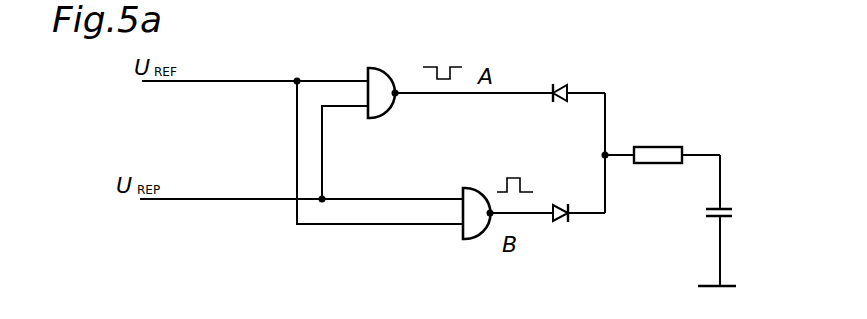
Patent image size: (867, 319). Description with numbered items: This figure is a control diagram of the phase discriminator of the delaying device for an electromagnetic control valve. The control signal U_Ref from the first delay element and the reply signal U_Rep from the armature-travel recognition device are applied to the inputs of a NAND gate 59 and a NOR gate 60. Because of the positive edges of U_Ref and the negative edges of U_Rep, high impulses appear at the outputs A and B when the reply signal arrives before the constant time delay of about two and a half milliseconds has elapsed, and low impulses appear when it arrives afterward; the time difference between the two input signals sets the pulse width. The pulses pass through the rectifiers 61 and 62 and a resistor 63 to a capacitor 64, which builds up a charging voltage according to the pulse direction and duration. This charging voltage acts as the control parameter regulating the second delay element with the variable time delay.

The NAND gate 59 is at (378, 80).
The NOR gate 60 is at (470, 238).
The rectifier 61 is at (567, 88).
The rectifier 62 is at (557, 226).
The resistor 63 is at (660, 162).
The capacitor 64 is at (708, 219).